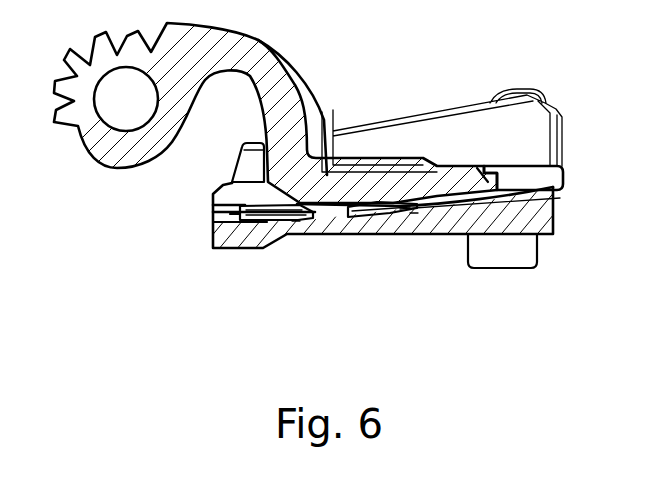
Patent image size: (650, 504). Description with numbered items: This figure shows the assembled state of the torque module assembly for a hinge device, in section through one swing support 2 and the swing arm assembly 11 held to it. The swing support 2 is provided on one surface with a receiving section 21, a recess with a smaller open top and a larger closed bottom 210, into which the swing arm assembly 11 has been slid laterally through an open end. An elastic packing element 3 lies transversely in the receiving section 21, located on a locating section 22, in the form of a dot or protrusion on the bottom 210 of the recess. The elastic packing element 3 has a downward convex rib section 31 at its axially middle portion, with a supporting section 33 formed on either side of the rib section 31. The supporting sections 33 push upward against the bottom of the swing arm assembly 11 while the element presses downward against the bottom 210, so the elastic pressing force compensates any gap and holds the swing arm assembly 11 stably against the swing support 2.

The swing arm assembly 11 is at (410, 163).
The receiving section 21 is at (477, 193).
The swing support 2 is at (426, 212).
The elastic packing element 3 is at (265, 220).
The supporting section 33 is at (261, 204).
The locating section 22 is at (316, 218).
The rib section 31 is at (350, 216).
The bottom of the receiving section 210 is at (296, 224).